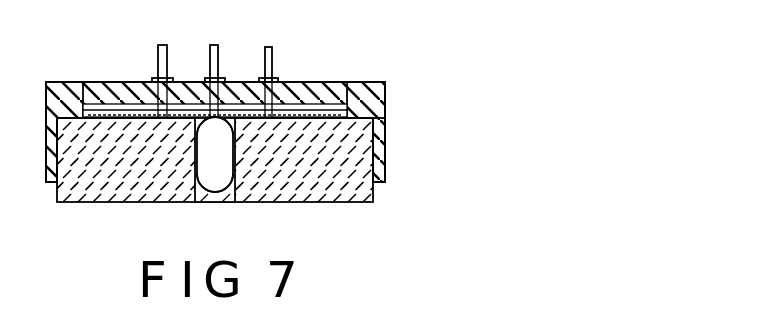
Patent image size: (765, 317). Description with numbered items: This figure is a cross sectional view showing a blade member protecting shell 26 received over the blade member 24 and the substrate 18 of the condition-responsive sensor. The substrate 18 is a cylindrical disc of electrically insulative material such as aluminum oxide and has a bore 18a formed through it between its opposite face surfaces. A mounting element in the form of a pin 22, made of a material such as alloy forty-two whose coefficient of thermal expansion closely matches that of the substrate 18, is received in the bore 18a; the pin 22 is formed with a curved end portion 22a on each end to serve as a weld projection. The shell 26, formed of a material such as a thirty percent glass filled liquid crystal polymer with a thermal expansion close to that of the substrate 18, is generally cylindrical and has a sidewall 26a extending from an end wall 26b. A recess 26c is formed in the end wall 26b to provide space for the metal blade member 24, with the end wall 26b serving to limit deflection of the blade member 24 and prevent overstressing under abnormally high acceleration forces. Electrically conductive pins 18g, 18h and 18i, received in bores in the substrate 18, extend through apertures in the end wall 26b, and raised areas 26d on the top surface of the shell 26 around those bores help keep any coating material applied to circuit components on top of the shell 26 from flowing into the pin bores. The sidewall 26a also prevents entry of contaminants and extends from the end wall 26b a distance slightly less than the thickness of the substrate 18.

The substrate 18 is at (340, 206).
The bore 18a is at (230, 197).
The electrically conductive pin 18g is at (160, 47).
The electrically conductive pin 18h is at (213, 44).
The electrically conductive pin 18i is at (268, 47).
The pin 22 is at (213, 193).
The curved end portion 22a is at (203, 118).
The blade member 24 is at (283, 110).
The shell 26 is at (386, 95).
The sidewall 26a is at (374, 163).
The end wall 26b is at (85, 97).
The recess 26c is at (350, 112).
The raised areas 26d is at (162, 98).